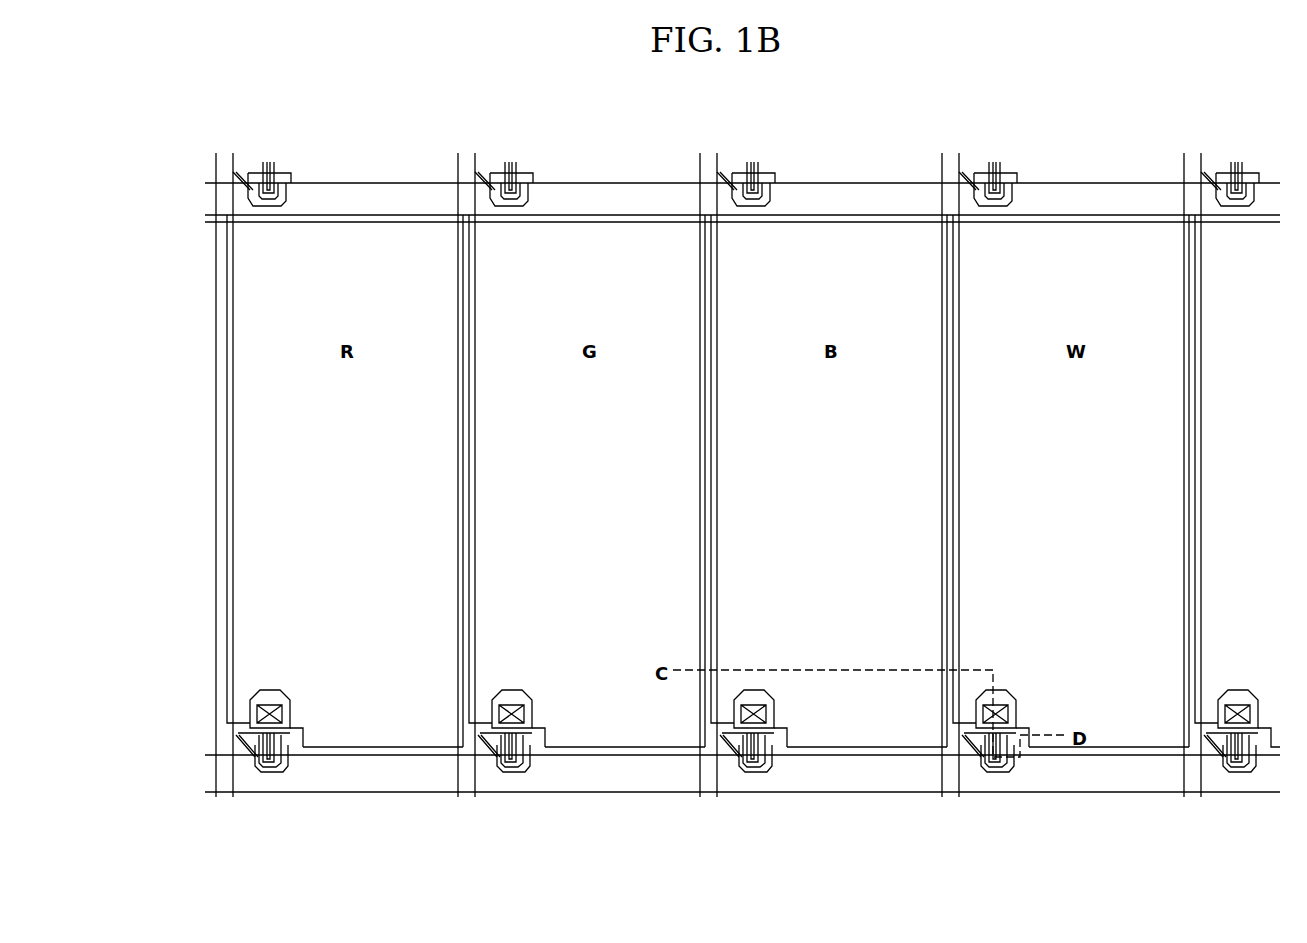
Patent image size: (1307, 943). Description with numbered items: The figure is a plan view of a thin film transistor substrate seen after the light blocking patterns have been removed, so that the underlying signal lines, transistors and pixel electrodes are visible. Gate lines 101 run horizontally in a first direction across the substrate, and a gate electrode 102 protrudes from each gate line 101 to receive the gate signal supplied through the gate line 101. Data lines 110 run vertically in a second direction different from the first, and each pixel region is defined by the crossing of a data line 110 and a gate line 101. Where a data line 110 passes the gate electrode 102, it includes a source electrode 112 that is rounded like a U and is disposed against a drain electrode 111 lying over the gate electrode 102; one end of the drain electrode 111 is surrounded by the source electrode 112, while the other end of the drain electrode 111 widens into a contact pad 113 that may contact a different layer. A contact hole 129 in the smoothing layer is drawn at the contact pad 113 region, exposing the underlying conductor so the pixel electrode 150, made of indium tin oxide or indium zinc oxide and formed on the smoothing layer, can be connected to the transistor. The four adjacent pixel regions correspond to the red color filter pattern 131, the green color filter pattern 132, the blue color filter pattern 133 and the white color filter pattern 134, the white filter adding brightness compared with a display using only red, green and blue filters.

The gate line 101 is at (303, 795).
The gate electrode 102 is at (301, 743).
The data line 110 is at (213, 200).
The drain electrode 111 is at (246, 735).
The source electrode 112 is at (252, 770).
The contact pad 113 is at (258, 696).
The contact hole 129 is at (256, 712).
The red color filter pattern 131 is at (390, 750).
The green color filter pattern 132 is at (632, 750).
The blue color filter pattern 133 is at (874, 750).
The white color filter pattern 134 is at (1116, 750).
The pixel electrode 150 is at (225, 250).